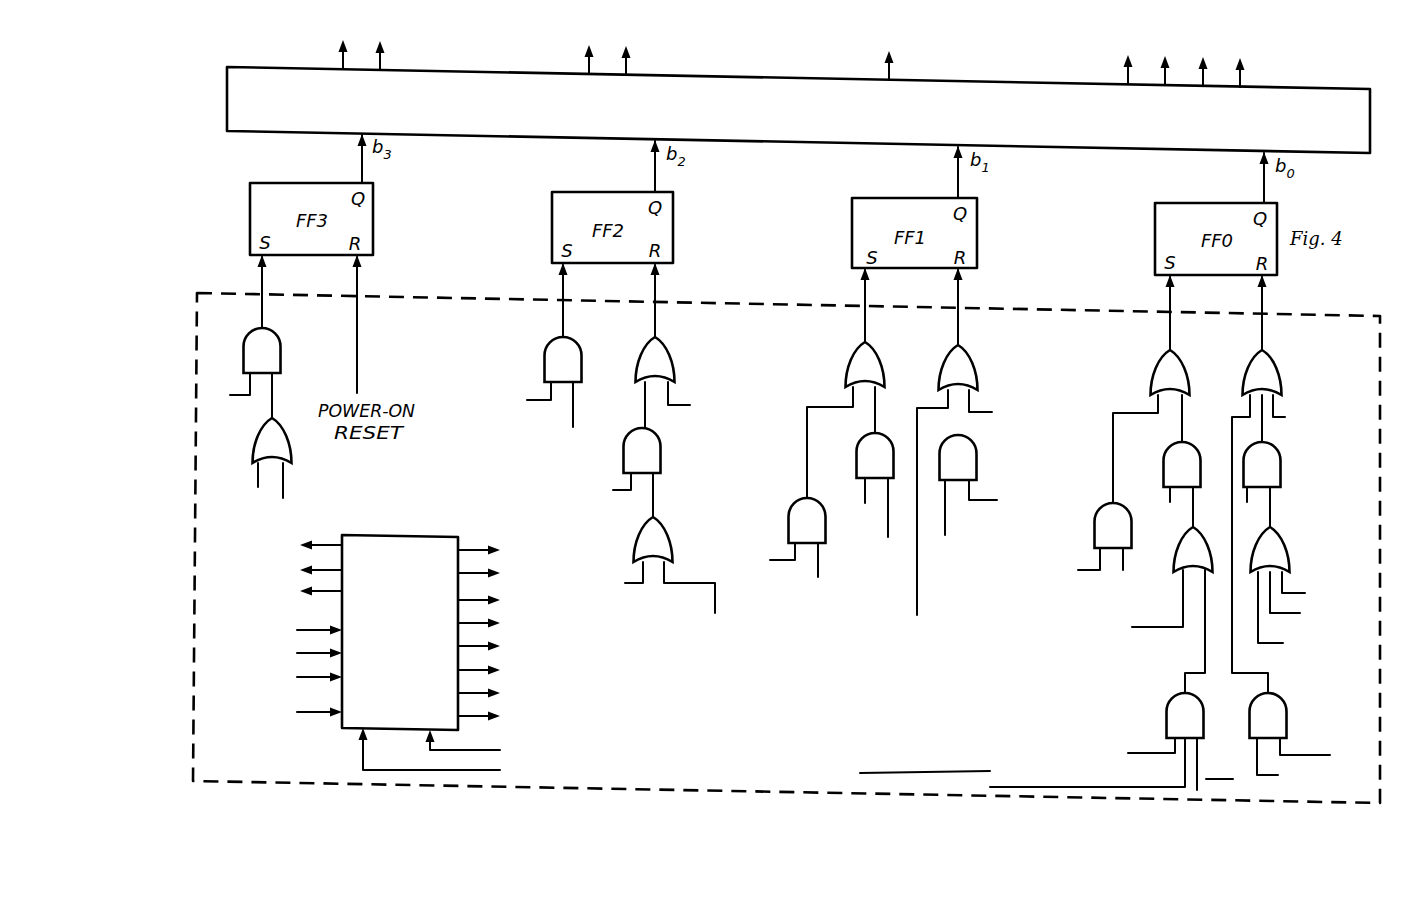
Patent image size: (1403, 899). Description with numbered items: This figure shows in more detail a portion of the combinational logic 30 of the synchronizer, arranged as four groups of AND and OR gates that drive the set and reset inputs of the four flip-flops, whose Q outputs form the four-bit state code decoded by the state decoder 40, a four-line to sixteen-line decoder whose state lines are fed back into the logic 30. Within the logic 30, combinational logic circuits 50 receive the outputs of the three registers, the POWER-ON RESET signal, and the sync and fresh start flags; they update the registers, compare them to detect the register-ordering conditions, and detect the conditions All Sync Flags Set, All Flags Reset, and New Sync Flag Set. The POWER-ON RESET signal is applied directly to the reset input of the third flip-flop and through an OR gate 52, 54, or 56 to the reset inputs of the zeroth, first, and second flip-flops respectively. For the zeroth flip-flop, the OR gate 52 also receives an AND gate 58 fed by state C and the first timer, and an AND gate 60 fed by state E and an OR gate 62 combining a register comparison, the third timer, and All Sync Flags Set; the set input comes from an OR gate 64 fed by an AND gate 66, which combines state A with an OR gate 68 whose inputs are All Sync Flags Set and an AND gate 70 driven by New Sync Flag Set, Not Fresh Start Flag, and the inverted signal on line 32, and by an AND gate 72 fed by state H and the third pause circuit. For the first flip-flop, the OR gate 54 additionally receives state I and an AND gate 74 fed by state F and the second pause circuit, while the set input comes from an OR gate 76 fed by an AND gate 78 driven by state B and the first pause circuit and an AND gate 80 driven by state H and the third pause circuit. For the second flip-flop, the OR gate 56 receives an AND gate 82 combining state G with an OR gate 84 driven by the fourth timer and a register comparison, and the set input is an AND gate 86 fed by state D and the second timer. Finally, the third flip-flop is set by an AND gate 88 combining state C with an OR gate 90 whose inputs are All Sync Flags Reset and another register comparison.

The state decoder 40 is at (277, 75).
The combinational logic 30 is at (1350, 315).
The combinational logic circuits 50 is at (432, 535).
The OR gate 52 is at (1271, 363).
The OR gate 54 is at (968, 356).
The OR gate 56 is at (665, 357).
The AND gate 58 is at (1286, 711).
The AND gate 60 is at (1274, 462).
The OR gate 62 is at (1289, 549).
The OR gate 64 is at (1160, 355).
The AND gate 66 is at (1170, 457).
The OR gate 68 is at (1180, 547).
The AND gate 70 is at (1168, 704).
The AND gate 72 is at (1094, 517).
The AND gate 74 is at (972, 456).
The OR gate 76 is at (858, 352).
The AND gate 78 is at (790, 512).
The AND gate 80 is at (862, 447).
The AND gate 82 is at (658, 451).
The OR gate 84 is at (668, 534).
The AND gate 86 is at (550, 347).
The AND gate 88 is at (275, 350).
The OR gate 90 is at (262, 437).
The lines 32 is at (1219, 787).